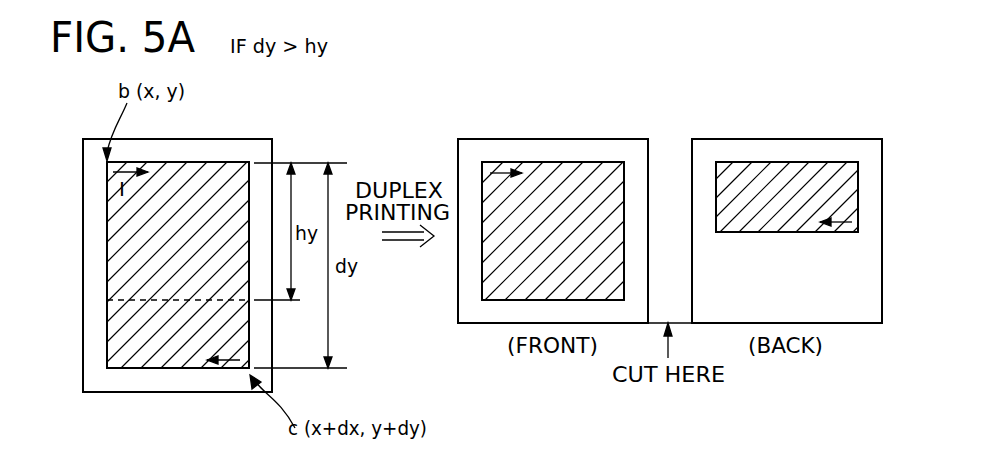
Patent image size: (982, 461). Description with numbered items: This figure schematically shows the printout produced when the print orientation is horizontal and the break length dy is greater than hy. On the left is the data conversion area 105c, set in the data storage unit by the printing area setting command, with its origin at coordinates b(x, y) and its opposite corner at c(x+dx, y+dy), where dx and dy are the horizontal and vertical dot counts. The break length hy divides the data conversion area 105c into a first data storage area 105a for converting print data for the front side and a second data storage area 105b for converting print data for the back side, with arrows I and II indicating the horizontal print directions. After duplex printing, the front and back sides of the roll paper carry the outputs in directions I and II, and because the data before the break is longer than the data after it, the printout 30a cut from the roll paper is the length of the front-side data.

The first data storage area 105a is at (230, 162).
The second data storage area 105b is at (127, 358).
The data conversion area 105c is at (178, 370).
The printout 30a is at (558, 139).